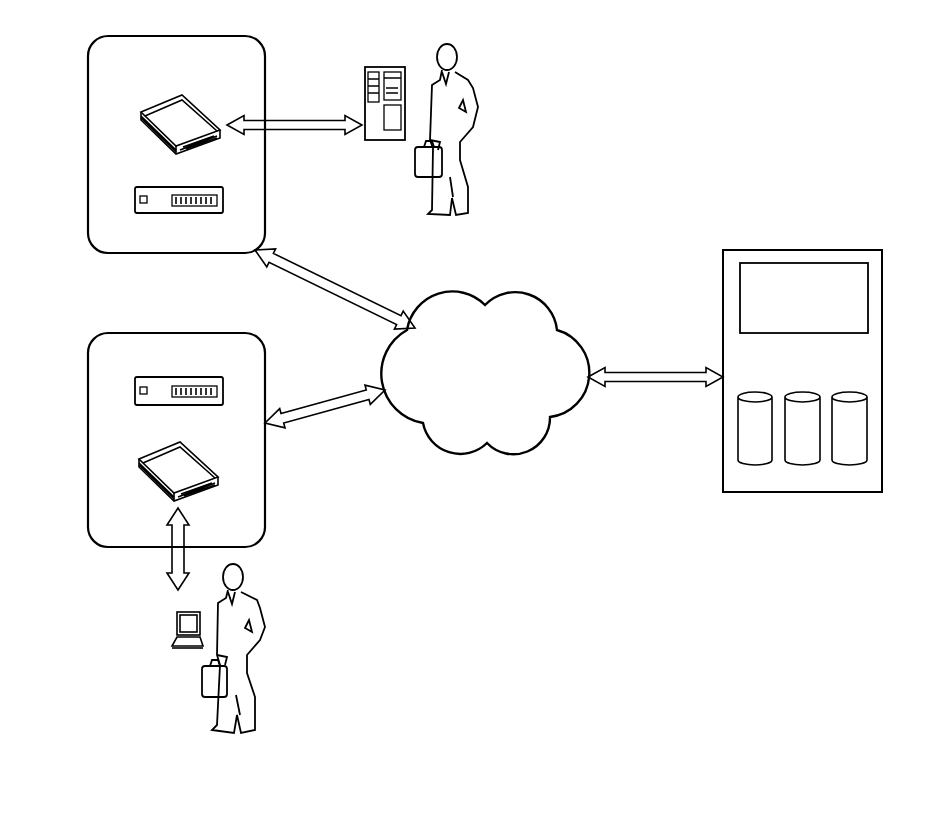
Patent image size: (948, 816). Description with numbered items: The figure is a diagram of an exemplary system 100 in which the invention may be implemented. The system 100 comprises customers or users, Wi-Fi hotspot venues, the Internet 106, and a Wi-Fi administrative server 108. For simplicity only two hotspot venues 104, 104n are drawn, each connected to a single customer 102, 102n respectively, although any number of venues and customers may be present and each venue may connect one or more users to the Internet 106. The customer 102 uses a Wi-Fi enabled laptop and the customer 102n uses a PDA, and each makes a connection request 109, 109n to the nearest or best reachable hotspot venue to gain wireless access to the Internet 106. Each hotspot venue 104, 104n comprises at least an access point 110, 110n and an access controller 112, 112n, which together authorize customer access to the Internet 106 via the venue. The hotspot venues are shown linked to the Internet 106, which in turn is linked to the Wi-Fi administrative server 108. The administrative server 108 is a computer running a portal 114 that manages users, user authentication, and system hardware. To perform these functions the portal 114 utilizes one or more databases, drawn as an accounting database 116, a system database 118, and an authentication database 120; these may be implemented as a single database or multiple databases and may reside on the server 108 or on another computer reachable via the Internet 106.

The system 100 is at (830, 631).
The customer 102 is at (265, 627).
The customer 102n is at (480, 105).
The Wi-Fi hotspot venue 104 is at (152, 333).
The Wi-Fi hotspot venue 104n is at (218, 254).
The Internet 106 is at (453, 453).
The Wi-Fi administrative server 108 is at (774, 249).
The connection request 109 is at (170, 557).
The connection request 109n is at (298, 116).
The access point 110 is at (218, 476).
The access point 110n is at (223, 200).
The access controller 112 is at (223, 390).
The access controller 112n is at (198, 104).
The portal 114 is at (867, 281).
The accounting database 116 is at (752, 466).
The system database 118 is at (801, 466).
The authentication database 120 is at (847, 466).